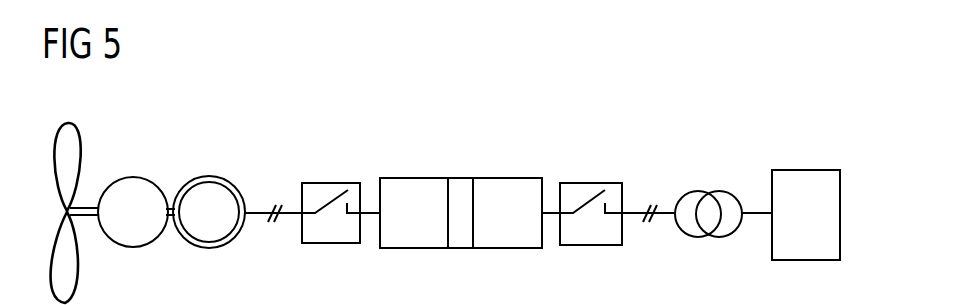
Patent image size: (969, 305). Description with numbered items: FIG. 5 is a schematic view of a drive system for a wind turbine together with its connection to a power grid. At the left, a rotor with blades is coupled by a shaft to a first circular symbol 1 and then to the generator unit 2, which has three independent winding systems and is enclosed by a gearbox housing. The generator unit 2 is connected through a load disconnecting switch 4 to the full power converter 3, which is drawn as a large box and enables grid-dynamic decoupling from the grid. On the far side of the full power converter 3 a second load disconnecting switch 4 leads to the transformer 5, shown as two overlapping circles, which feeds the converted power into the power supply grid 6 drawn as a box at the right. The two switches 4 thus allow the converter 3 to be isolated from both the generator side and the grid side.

The wind turbine generator 1 is at (133, 177).
The generator unit 2 is at (209, 176).
The full power converter 3 is at (460, 177).
The load disconnecting switches 4 is at (332, 182).
The transformer 5 is at (697, 190).
The power supply grid 6 is at (805, 169).